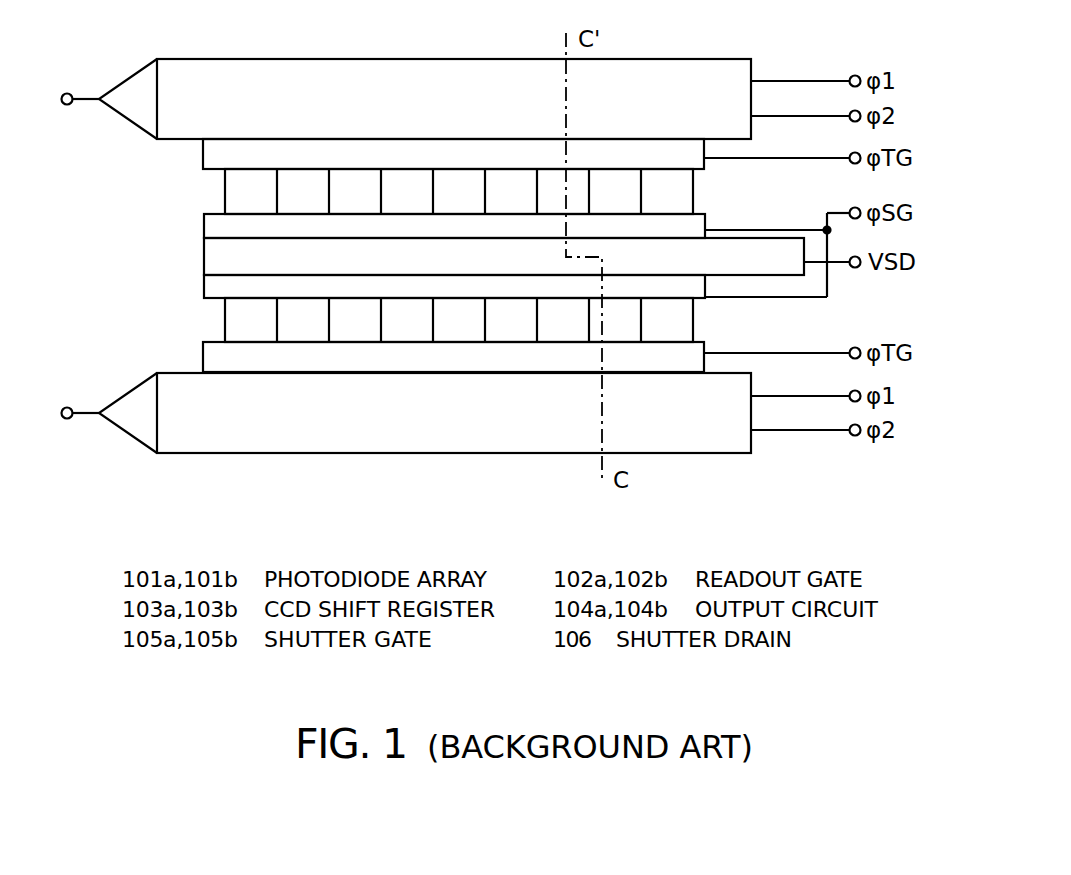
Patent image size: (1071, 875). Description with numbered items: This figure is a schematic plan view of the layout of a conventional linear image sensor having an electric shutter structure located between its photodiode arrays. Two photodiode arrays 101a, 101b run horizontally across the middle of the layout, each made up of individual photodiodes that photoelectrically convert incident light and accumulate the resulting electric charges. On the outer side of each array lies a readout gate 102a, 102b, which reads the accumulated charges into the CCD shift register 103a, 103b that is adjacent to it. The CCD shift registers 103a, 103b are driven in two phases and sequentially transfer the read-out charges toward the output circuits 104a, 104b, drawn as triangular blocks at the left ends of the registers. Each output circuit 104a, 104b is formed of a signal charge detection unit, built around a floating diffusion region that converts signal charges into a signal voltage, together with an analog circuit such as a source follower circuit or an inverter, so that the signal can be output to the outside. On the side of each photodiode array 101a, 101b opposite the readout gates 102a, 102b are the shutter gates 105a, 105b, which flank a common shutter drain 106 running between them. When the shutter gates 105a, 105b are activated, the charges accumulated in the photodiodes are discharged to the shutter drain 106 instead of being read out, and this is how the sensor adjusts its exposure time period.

The photodiode array 101a is at (225, 196).
The photodiode array 101b is at (225, 328).
The readout gate 102a is at (205, 162).
The readout gate 102b is at (205, 362).
The CCD shift register 103a is at (375, 70).
The CCD shift register 103b is at (377, 442).
The output circuit 104a is at (128, 83).
The output circuit 104b is at (129, 431).
The shutter gate 105a is at (205, 230).
The shutter gate 105b is at (205, 296).
The shutter drain 106 is at (205, 264).